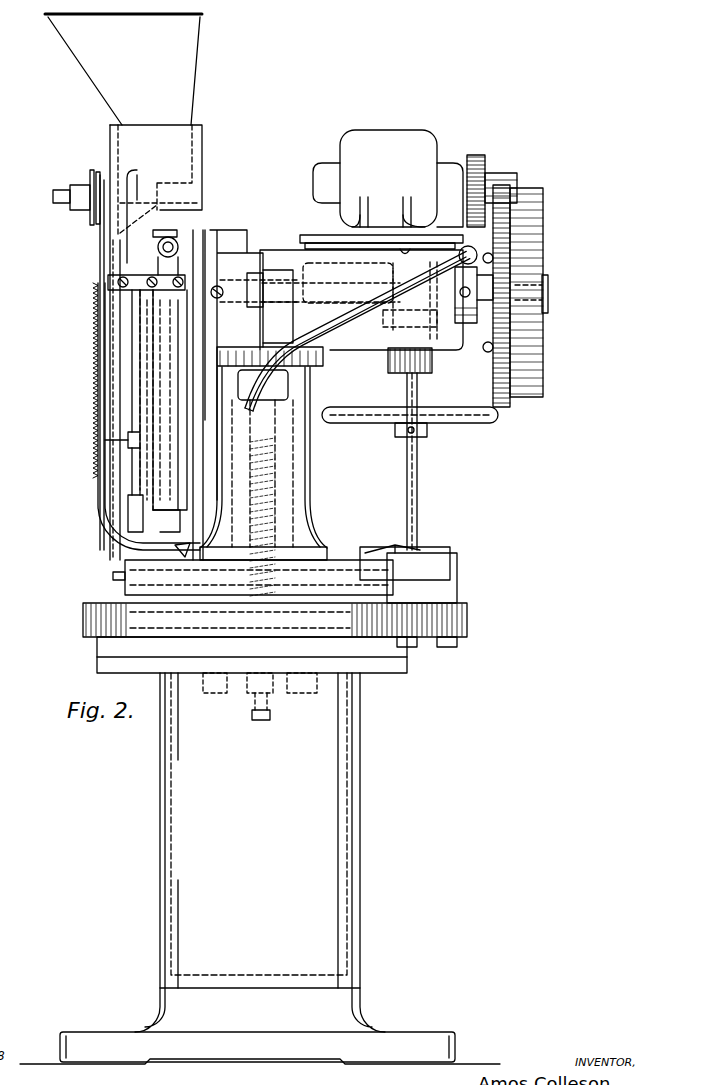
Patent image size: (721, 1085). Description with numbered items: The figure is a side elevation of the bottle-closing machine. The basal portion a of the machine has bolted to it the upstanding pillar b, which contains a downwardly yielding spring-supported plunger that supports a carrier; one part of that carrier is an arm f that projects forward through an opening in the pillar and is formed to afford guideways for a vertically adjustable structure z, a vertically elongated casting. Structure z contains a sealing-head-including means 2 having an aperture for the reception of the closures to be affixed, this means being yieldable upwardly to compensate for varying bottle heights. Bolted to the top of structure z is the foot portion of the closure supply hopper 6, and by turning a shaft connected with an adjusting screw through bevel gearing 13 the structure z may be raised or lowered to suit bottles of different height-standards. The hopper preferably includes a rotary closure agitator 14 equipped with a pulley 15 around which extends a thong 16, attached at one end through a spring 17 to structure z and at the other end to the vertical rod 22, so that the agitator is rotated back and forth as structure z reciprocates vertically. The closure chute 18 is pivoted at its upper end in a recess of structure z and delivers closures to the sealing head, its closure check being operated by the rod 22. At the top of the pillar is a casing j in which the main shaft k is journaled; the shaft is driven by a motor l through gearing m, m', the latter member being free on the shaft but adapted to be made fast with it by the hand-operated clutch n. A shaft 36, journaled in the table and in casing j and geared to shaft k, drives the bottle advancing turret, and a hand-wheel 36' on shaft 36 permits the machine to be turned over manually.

The closure supply hopper 6 is at (202, 172).
The rotary closure agitator 14 is at (100, 183).
The pulley 15 is at (90, 215).
The thong 16 is at (82, 280).
The spring 17 is at (90, 462).
The closure chute 18 is at (100, 520).
The bevel gearing 13 is at (178, 233).
The vertical rod 22 is at (137, 478).
The arm f is at (167, 400).
The vertically adjustable structure z is at (182, 490).
The sealing-head-including means 2 is at (173, 525).
The casing j is at (368, 343).
The main shaft k is at (337, 295).
The motor l is at (409, 141).
The gearing m is at (500, 191).
The gearing m' is at (531, 296).
The hand-operated clutch n is at (470, 316).
The shaft 36 is at (408, 488).
The hand-wheel 36' is at (410, 433).
The pillar b is at (300, 478).
The basal portion a is at (357, 727).